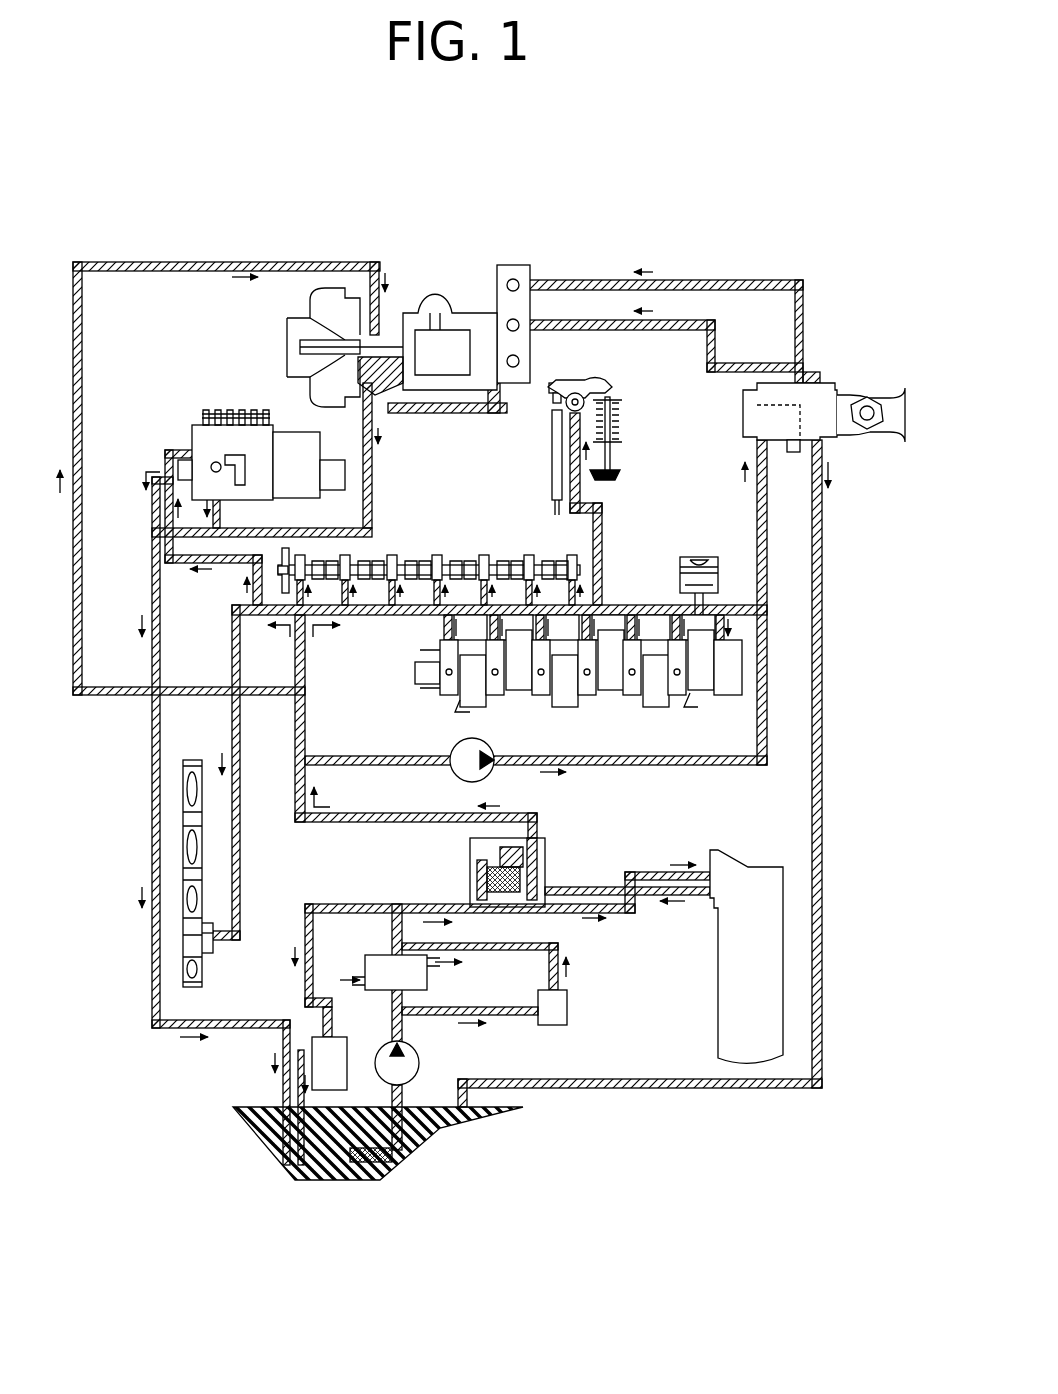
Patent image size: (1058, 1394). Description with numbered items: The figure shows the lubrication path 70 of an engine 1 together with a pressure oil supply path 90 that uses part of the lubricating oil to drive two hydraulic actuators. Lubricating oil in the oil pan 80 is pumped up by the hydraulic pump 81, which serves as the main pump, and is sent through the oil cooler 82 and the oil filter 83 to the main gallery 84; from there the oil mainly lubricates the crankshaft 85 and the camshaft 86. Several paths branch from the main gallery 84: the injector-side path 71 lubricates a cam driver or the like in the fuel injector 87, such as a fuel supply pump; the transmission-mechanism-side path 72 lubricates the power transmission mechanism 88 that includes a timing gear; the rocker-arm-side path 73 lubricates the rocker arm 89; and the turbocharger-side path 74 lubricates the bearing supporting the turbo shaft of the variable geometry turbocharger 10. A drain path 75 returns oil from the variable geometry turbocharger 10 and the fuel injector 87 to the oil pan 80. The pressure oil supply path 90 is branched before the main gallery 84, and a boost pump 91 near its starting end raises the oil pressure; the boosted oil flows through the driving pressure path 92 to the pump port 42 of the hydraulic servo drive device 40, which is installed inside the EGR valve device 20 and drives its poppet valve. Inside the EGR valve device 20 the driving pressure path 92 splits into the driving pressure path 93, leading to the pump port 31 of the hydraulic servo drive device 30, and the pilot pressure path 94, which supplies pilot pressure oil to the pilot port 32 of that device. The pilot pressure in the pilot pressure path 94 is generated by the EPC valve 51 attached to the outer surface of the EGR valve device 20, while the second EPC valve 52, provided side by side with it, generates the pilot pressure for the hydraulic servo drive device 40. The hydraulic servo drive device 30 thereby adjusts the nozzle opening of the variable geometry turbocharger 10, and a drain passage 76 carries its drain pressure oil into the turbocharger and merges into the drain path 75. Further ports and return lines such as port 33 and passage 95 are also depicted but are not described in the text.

The engine 1 is at (250, 186).
The variable geometry turbocharger 10 is at (448, 261).
The EGR valve device 20 is at (845, 400).
The hydraulic servo drive device (first hydraulic actuator) 30 is at (517, 263).
The pump port 31 is at (516, 327).
The pilot port 32 is at (516, 283).
The oil port 33 is at (515, 368).
The hydraulic servo drive device (second hydraulic actuator) 40 is at (824, 412).
The pump port 42 is at (800, 420).
The EPC valve (first control valve) 51 is at (793, 452).
The EPC valve (second control valve) 52 is at (787, 496).
The lubrication path 70 is at (436, 236).
The injector-side path 71 is at (236, 560).
The transmission-mechanism-side path 72 is at (240, 857).
The rocker-arm-side path 73 is at (603, 518).
The turbocharger-side path 74 is at (83, 390).
The drain path 75 is at (152, 806).
The drain passage 76 is at (431, 410).
The oil pan 80 is at (410, 1160).
The hydraulic pump 81 is at (418, 1062).
The oil cooler 82 is at (430, 975).
The oil filter 83 is at (735, 990).
The main gallery 84 is at (392, 616).
The crankshaft 85 is at (735, 692).
The camshaft 86 is at (400, 560).
The fuel injector 87 is at (236, 428).
The power transmission mechanism 88 is at (222, 951).
The rocker arm 89 is at (600, 385).
The pressure oil supply path 90 is at (637, 772).
The boost pump 91 is at (492, 745).
The driving pressure path 92 is at (695, 768).
The driving pressure path 93 is at (728, 372).
The pilot pressure path 94 is at (740, 280).
The return oil passage 95 is at (822, 782).